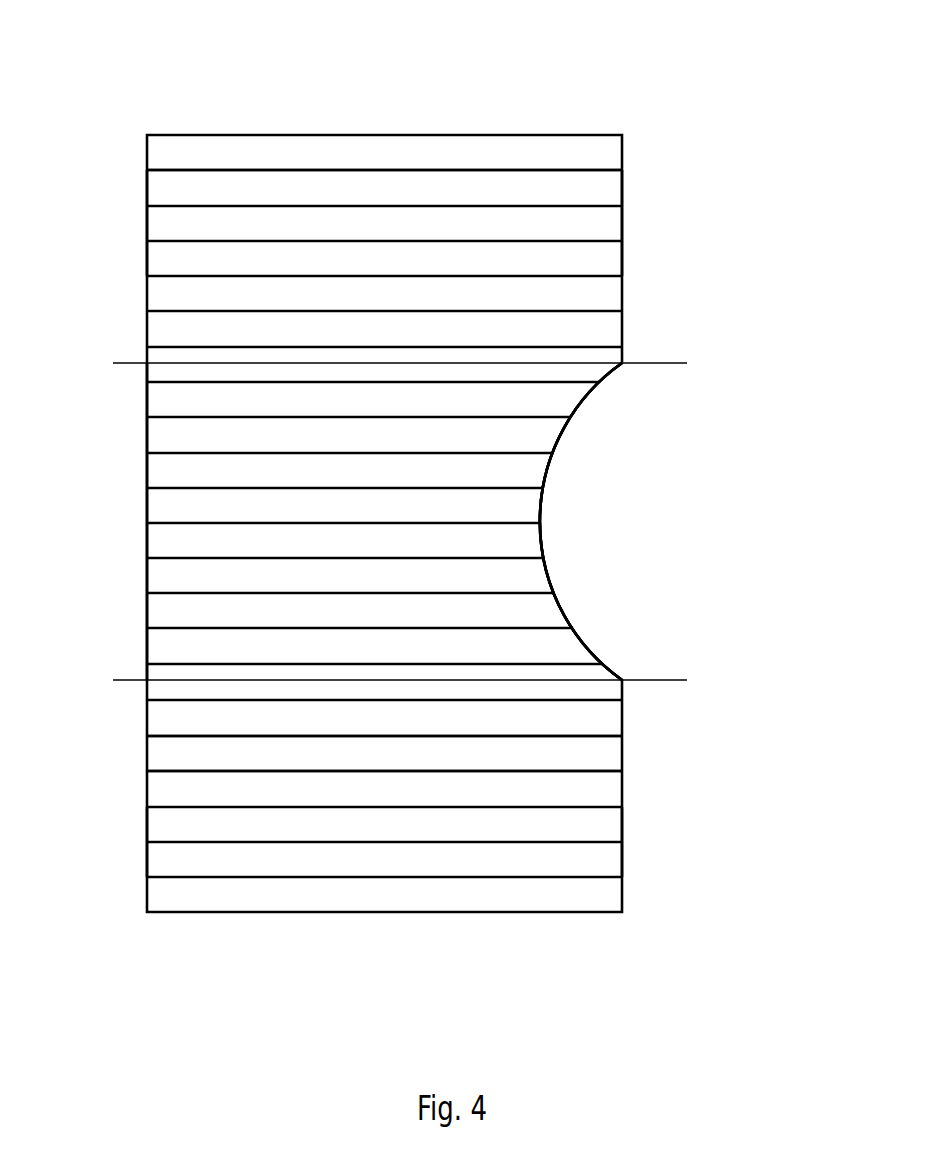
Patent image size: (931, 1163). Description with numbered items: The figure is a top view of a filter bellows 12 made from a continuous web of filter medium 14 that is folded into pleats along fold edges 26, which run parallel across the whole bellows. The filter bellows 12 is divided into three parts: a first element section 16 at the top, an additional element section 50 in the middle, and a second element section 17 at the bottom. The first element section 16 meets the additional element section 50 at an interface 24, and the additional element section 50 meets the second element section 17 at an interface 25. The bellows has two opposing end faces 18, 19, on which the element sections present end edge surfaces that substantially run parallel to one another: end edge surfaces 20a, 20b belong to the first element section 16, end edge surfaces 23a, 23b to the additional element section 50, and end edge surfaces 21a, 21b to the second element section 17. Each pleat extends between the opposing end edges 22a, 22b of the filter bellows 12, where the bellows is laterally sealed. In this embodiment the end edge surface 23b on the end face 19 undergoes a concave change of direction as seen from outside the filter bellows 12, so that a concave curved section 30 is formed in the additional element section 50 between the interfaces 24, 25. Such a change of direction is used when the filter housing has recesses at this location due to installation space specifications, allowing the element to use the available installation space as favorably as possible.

The filter bellows 12 is at (764, 148).
The filter medium 14 is at (598, 753).
The first element section 16 is at (387, 270).
The second element section 17 is at (393, 835).
The end face 18 is at (137, 250).
The end face 19 is at (634, 257).
The end edge surface 20a is at (150, 182).
The end edge surface 20b is at (630, 188).
The end edge surface 21a is at (150, 815).
The end edge surface 21b is at (630, 814).
The end edge 22a is at (147, 851).
The end edge 22b is at (624, 853).
The end edge surface 23a is at (150, 553).
The end edge surface 23b is at (552, 476).
The interface 24 is at (648, 363).
The interface 25 is at (650, 680).
The fold edges 26 is at (382, 170).
The concave curved section 30 is at (556, 543).
The additional element section 50 is at (361, 516).